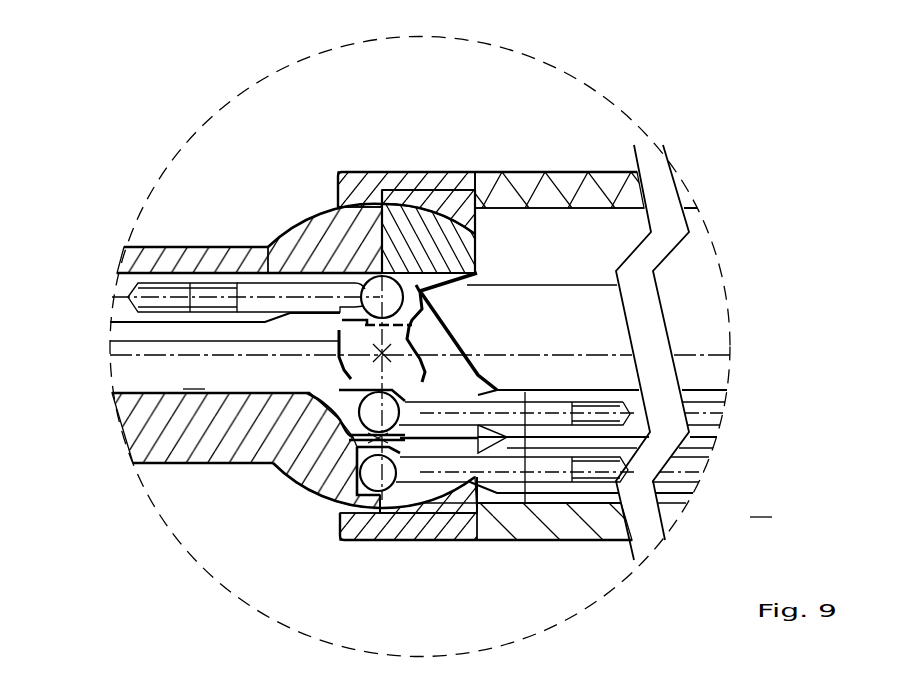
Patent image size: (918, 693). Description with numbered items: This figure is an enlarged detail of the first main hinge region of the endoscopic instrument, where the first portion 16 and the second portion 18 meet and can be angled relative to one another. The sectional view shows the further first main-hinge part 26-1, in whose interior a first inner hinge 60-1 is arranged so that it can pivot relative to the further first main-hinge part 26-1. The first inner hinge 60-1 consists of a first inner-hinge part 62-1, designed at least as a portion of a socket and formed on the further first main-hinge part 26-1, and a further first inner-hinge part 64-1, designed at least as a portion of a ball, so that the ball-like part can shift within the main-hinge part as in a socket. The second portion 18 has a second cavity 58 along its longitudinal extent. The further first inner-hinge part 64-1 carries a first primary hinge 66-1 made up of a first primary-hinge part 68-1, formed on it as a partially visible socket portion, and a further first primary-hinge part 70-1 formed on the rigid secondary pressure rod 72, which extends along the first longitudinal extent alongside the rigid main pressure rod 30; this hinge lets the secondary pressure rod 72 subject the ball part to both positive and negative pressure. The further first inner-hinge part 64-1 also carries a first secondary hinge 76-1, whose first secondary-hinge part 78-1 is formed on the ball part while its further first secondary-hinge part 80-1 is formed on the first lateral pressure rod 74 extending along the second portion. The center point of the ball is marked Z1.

The first portion 16 is at (508, 185).
The second portion 18 is at (178, 246).
The further first main-hinge part 26-1 is at (258, 491).
The main pressure rod 30 is at (680, 480).
The second cavity 58 is at (211, 380).
The first inner hinge 60-1 is at (483, 338).
The first inner-hinge part 62-1 is at (318, 400).
The further first inner-hinge part 64-1 is at (477, 343).
The first primary hinge 66-1 is at (348, 455).
The first primary-hinge part 68-1 is at (343, 443).
The further first primary-hinge part 70-1 is at (427, 494).
The secondary pressure rod 72 is at (712, 400).
The first lateral pressure rod 74 is at (118, 340).
The first secondary hinge 76-1 is at (343, 262).
The first secondary-hinge part 78-1 is at (420, 268).
The further first secondary-hinge part 80-1 is at (373, 288).
The center point Z1 is at (365, 347).